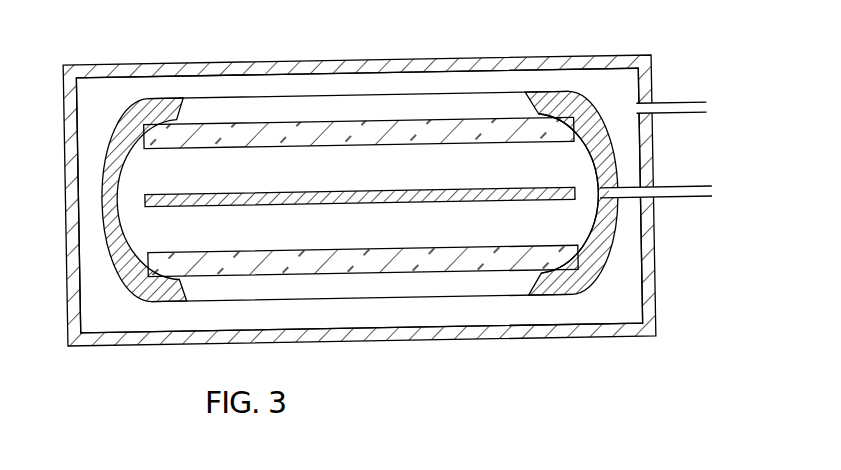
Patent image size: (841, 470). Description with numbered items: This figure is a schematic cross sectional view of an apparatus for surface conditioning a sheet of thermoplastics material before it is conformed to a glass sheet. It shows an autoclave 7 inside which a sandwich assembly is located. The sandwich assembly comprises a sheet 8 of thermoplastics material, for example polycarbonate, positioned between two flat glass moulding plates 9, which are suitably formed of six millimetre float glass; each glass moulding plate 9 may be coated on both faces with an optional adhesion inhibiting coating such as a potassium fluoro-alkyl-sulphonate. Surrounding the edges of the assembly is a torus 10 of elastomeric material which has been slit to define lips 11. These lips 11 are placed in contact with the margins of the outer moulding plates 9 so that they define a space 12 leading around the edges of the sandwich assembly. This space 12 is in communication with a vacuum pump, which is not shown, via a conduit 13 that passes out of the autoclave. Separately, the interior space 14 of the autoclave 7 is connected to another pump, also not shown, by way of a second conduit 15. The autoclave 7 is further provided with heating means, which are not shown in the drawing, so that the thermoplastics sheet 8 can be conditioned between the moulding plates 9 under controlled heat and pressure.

The autoclave 7 is at (652, 283).
The sheet of thermoplastics material 8 is at (385, 203).
The glass moulding plates 9 is at (445, 118).
The torus 10 is at (567, 93).
The lips 11 is at (532, 121).
The space 12 is at (597, 172).
The conduit 13 is at (670, 193).
The interior space 14 is at (616, 80).
The second conduit 15 is at (686, 100).